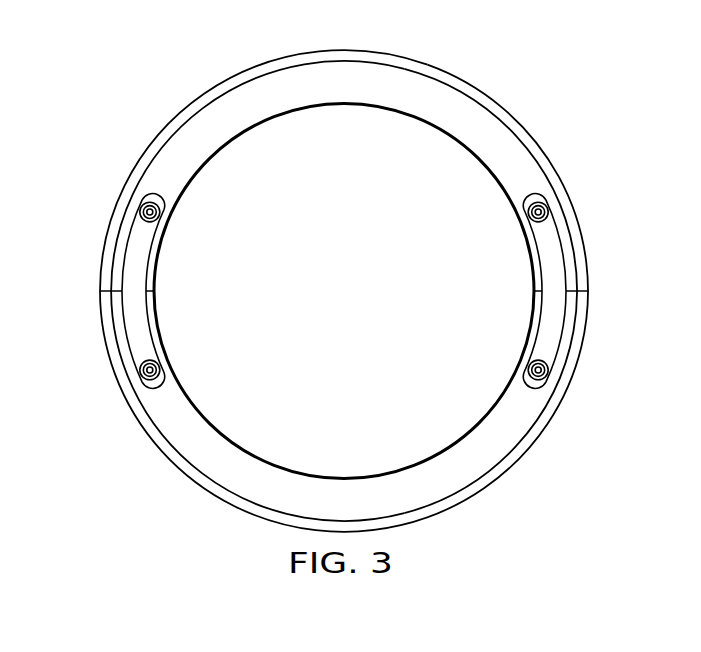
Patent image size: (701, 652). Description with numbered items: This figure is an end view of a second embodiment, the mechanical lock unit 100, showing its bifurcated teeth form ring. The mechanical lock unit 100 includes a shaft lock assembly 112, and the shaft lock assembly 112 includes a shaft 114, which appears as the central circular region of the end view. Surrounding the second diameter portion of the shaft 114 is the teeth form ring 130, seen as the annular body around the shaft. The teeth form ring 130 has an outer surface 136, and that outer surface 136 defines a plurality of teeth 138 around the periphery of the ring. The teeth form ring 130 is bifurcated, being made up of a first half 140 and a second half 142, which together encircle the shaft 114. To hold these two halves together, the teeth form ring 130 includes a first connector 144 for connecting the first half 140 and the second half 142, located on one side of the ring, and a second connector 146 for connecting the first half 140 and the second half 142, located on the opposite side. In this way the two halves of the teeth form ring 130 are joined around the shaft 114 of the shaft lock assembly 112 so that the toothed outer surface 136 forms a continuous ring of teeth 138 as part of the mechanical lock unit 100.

The mechanical lock unit 100 is at (338, 269).
The shaft lock assembly 112 is at (306, 269).
The shaft 114 is at (363, 307).
The teeth form ring 130 is at (472, 118).
The outer surface 136 is at (445, 72).
The teeth 138 is at (395, 53).
The first half 140 is at (512, 162).
The second half 142 is at (513, 422).
The first connector 144 is at (133, 318).
The second connector 146 is at (550, 318).